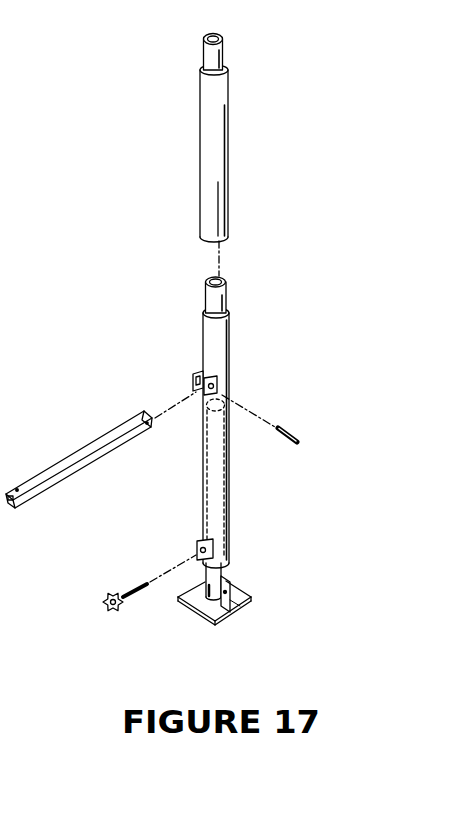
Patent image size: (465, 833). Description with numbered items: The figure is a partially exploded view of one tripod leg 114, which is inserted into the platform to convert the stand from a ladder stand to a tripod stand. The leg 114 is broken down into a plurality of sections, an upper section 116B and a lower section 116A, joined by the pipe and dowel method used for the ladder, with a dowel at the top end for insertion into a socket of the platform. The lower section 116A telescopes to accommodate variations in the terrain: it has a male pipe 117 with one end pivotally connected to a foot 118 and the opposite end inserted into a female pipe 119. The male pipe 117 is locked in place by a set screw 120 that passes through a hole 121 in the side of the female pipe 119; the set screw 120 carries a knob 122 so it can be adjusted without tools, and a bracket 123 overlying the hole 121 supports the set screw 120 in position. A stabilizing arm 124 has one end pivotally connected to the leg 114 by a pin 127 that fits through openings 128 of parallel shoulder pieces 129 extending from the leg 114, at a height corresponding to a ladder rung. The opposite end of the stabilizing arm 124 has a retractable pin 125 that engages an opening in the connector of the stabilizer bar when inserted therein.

The leg 114 is at (108, 265).
The lower section 116A is at (243, 492).
The upper section 116B is at (248, 127).
The male pipe 117 is at (223, 578).
The foot 118 is at (218, 616).
The female pipe 119 is at (218, 347).
The set screw 120 is at (130, 591).
The hole 121 is at (197, 551).
The knob 122 is at (112, 612).
The bracket 123 is at (200, 539).
The stabilizing arm 124 is at (130, 419).
The retractable pin 125 is at (15, 488).
The pin 127 is at (293, 431).
The opening 128 is at (216, 385).
The shoulder piece 129 is at (199, 372).